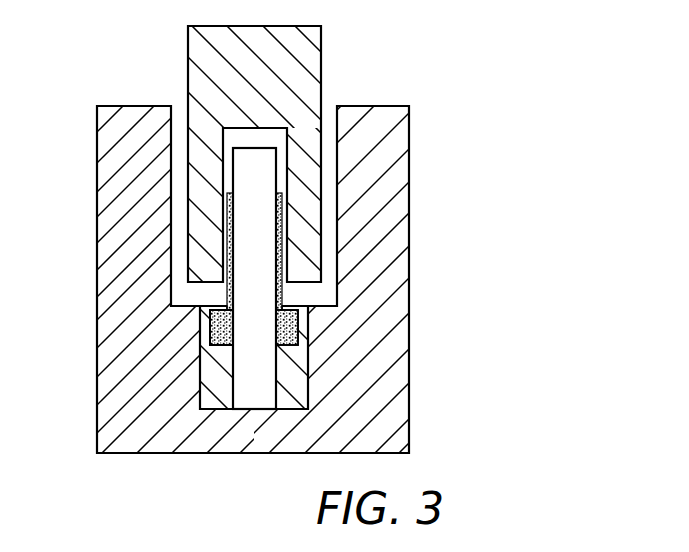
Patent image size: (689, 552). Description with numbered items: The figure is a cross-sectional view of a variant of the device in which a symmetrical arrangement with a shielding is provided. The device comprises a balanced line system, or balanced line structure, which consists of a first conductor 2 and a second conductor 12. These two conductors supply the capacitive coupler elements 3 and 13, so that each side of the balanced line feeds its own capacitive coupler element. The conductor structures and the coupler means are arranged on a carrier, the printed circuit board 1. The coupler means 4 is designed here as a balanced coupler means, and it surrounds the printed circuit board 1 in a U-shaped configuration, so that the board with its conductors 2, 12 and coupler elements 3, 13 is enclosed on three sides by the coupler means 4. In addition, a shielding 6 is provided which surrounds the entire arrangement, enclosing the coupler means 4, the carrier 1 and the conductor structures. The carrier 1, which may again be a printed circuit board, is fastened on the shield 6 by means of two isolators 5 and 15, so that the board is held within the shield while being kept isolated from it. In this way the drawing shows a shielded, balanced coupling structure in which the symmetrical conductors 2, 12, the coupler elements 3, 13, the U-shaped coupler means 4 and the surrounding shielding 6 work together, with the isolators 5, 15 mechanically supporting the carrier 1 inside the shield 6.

The printed circuit board 1 is at (258, 388).
The first conductor 2 is at (302, 323).
The capacitive coupler element 3 is at (283, 298).
The coupler means 4 is at (321, 61).
The isolator 5 is at (302, 386).
The shielding 6 is at (262, 436).
The second conductor 12 is at (212, 325).
The capacitive coupler element 13 is at (230, 293).
The isolator 15 is at (213, 374).